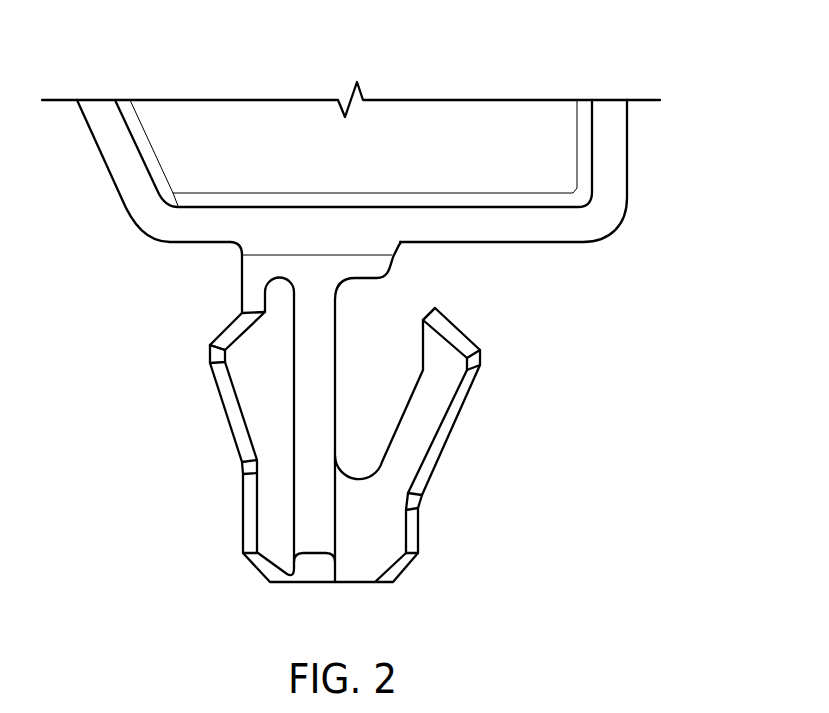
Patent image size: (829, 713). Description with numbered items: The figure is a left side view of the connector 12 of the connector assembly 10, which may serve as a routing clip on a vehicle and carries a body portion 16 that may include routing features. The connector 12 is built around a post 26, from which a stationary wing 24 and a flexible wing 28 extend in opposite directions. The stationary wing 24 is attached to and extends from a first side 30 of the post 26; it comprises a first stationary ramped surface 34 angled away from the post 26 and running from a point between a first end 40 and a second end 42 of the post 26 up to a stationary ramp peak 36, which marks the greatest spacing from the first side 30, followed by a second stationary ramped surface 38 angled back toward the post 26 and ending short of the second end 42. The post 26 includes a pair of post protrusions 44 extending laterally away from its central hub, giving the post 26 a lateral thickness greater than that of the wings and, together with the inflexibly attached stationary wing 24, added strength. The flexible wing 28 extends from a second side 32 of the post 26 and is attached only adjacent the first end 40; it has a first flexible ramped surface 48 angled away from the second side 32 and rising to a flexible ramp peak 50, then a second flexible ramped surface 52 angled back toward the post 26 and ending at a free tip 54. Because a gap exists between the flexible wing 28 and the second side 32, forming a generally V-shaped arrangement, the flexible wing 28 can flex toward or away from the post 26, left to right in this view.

The connector assembly 10 is at (560, 63).
The body portion 16 is at (633, 127).
The connector 12 is at (603, 290).
The second end of the post 42 is at (202, 258).
The post protrusions 44 is at (307, 350).
The second side of the post 32 is at (342, 400).
The flexible wing 28 is at (488, 378).
The tip of the flexible wing 54 is at (435, 300).
The second flexible ramped surface 52 is at (462, 331).
The flexible ramp peak 50 is at (483, 360).
The first flexible ramped surface 48 is at (453, 417).
The first end of the post 40 is at (428, 530).
The stationary wing 24 is at (145, 390).
The second stationary ramped surface 38 is at (223, 340).
The stationary ramp peak 36 is at (213, 357).
The first stationary ramped surface 34 is at (235, 423).
The first side of the post 30 is at (235, 512).
The post 26 is at (305, 585).